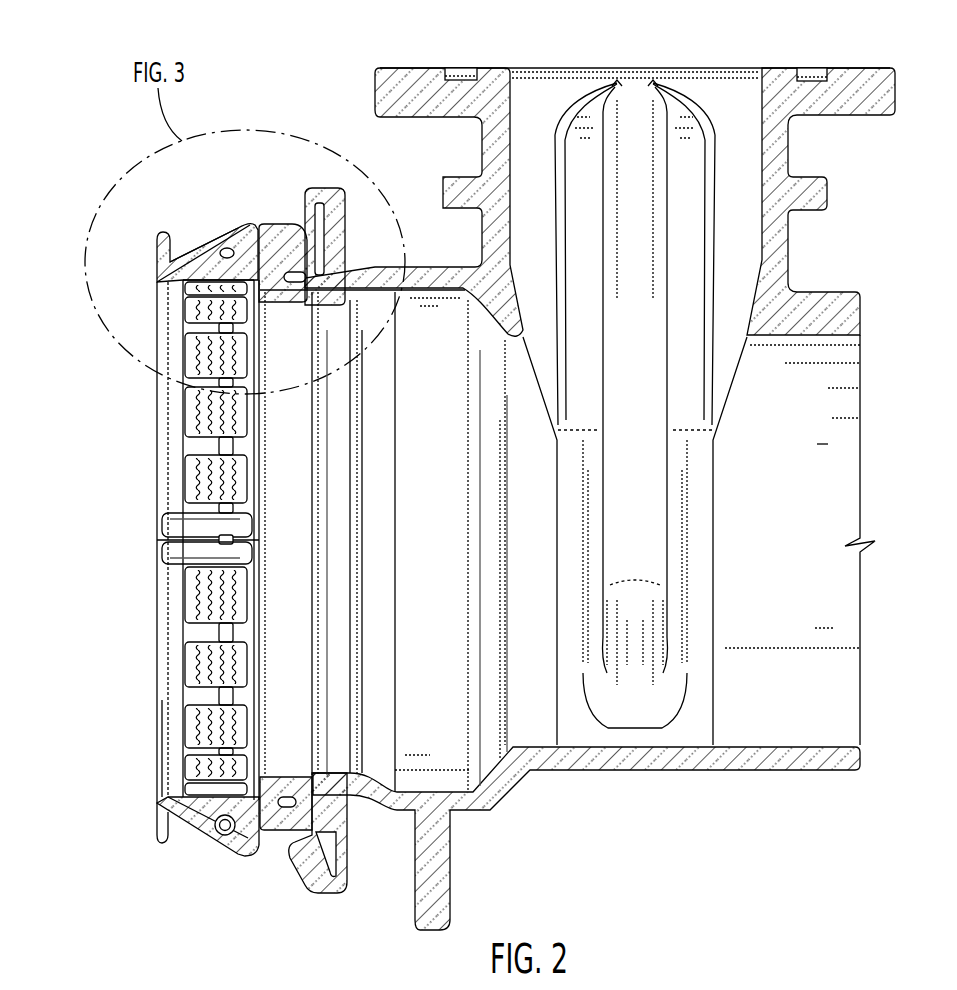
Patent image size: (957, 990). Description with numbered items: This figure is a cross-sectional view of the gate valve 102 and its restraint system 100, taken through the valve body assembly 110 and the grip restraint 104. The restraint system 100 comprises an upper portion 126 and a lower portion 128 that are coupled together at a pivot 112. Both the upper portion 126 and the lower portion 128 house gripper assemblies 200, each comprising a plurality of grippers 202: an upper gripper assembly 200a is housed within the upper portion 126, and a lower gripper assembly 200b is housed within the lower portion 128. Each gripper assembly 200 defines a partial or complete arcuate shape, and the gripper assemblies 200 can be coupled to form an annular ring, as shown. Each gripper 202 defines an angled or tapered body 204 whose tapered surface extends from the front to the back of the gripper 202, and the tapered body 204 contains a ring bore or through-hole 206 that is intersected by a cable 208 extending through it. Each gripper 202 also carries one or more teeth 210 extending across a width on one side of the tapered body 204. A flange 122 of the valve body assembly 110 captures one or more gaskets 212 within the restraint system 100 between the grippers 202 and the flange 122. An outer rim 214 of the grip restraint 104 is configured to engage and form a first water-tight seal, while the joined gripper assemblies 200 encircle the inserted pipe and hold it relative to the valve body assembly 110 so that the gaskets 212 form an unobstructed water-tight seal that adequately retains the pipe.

The restraint system 100 is at (116, 459).
The housing body 102 is at (872, 88).
The grip restraint 104 is at (157, 637).
The valve body assembly 110 is at (653, 770).
The pivot 112 is at (150, 539).
The flange 122 is at (323, 272).
The upper portion 126 is at (157, 245).
The lower portion 128 is at (157, 831).
The gripper assemblies 200 is at (170, 306).
The upper gripper assembly 200a is at (178, 366).
The lower gripper assembly 200b is at (172, 737).
The gripper 202 is at (172, 588).
The tapered body 204 is at (242, 255).
The through-hole 206 is at (208, 247).
The cable 208 is at (228, 248).
The teeth 210 is at (183, 800).
The gaskets 212 is at (278, 832).
The outer rim 214 is at (157, 776).